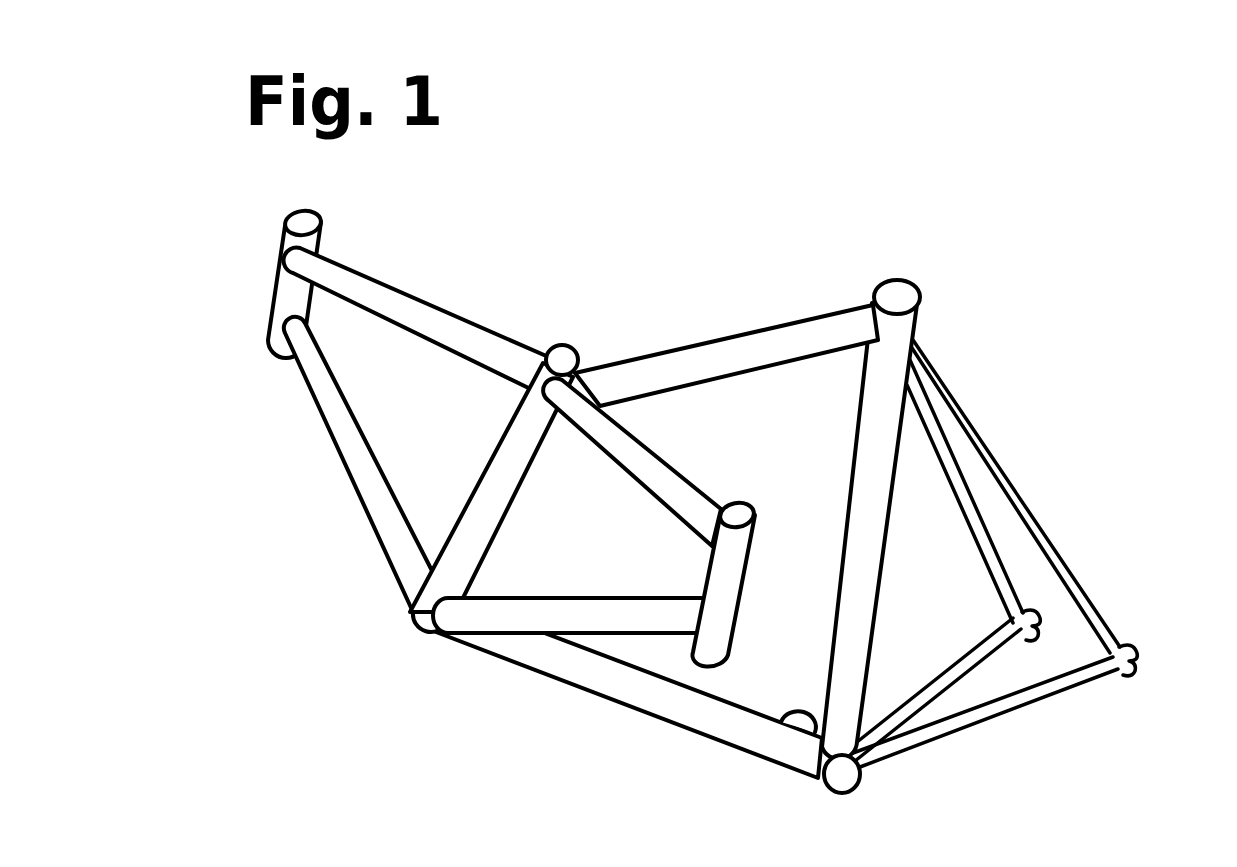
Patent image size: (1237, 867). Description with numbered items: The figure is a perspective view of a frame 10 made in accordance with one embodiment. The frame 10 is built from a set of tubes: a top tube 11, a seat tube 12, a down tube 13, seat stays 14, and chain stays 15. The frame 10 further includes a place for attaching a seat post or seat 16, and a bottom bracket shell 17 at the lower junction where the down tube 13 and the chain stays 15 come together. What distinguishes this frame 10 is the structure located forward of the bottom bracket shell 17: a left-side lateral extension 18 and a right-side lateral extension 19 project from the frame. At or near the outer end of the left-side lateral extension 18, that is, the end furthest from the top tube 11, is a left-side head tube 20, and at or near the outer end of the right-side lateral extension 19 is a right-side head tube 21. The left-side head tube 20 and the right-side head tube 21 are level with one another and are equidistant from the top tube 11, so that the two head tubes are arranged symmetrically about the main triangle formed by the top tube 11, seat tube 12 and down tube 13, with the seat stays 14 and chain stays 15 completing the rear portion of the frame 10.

The frame 10 is at (778, 253).
The top tube 11 is at (640, 378).
The seat tube 12 is at (862, 565).
The down tube 13 is at (712, 718).
The seat stays 14 is at (1003, 583).
The chain stays 15 is at (982, 652).
The place for attaching a seat post or seat 16 is at (893, 292).
The bottom bracket shell 17 is at (810, 775).
The left-side lateral extension 18 is at (585, 413).
The right-side lateral extension 19 is at (412, 315).
The left-side head tube 20 is at (530, 617).
The right-side head tube 21 is at (290, 292).